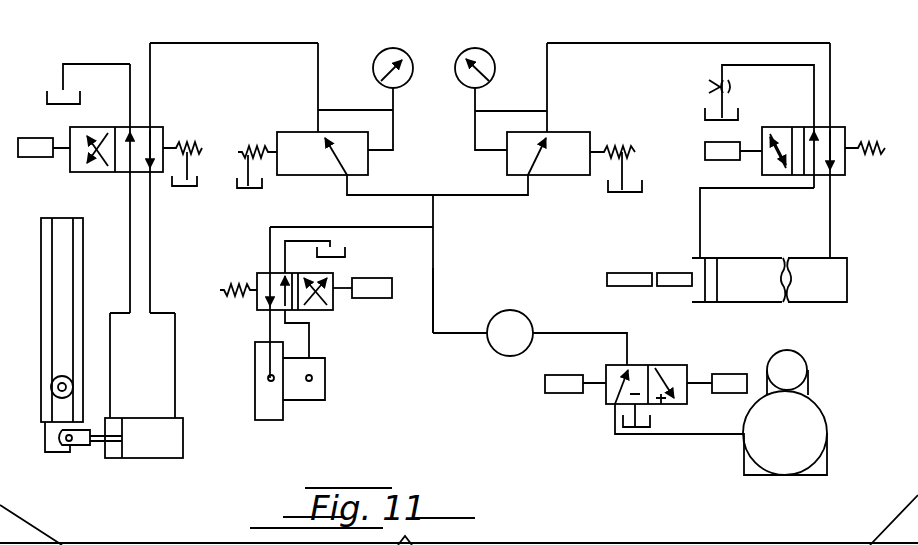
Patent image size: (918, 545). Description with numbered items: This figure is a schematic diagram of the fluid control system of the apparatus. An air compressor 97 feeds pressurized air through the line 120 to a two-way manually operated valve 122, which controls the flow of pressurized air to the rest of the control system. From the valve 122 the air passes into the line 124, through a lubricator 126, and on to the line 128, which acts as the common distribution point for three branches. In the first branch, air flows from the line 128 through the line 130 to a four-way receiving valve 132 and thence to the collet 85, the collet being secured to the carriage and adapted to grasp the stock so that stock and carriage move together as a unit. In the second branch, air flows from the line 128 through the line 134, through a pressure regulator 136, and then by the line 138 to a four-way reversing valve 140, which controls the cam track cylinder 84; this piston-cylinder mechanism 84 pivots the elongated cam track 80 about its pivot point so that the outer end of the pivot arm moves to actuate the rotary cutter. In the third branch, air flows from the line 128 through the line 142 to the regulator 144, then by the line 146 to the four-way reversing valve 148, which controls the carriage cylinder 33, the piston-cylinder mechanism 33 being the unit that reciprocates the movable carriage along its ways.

The line 138 is at (233, 43).
The four-way reversing valve 140 is at (168, 127).
The pressure regulator 136 is at (305, 176).
The line 134 is at (393, 189).
The regulator 144 is at (580, 132).
The line 146 is at (673, 43).
The four-way reversing valve 148 is at (785, 127).
The piston-cylinder mechanism 33 is at (764, 258).
The line 142 is at (500, 197).
The line 130 is at (400, 228).
The line 128 is at (433, 268).
The four-way receiving valve 132 is at (340, 310).
The cam track 80 is at (83, 277).
The collet 85 is at (325, 378).
The piston-cylinder mechanism 84 is at (153, 448).
The lubricator 126 is at (490, 345).
The line 124 is at (592, 325).
The two-way manually operated valve 122 is at (660, 365).
The line 120 is at (684, 434).
The air compressor 97 is at (828, 422).